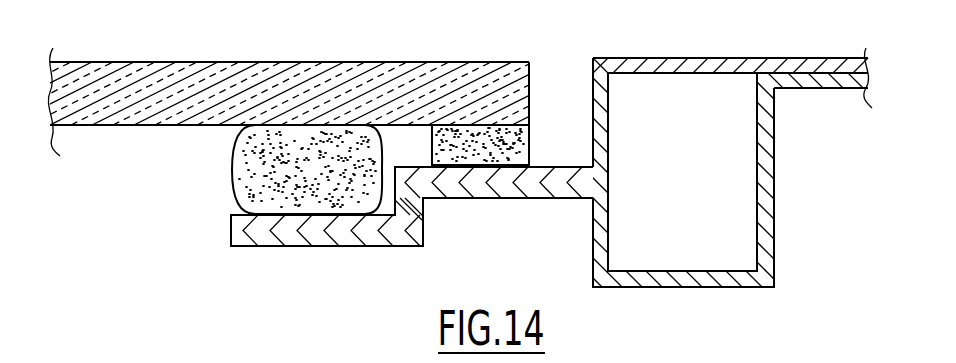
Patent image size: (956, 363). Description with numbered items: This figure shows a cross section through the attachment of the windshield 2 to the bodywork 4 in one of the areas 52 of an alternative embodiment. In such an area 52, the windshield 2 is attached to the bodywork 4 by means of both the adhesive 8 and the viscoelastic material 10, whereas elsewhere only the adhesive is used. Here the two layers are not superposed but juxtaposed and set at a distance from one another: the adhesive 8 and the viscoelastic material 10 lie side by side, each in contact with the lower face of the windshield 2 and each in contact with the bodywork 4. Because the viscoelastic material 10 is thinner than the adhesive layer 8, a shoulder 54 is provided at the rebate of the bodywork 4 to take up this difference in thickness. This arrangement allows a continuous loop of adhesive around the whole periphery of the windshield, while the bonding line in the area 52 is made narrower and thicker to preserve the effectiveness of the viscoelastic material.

The windshield 2 is at (222, 90).
The bodywork 4 is at (693, 70).
The layer of standard adhesive 8 is at (243, 182).
The layer of elastic or viscoelastic material 10 is at (510, 142).
The areas 52 is at (170, 151).
The shoulder 54 is at (404, 152).